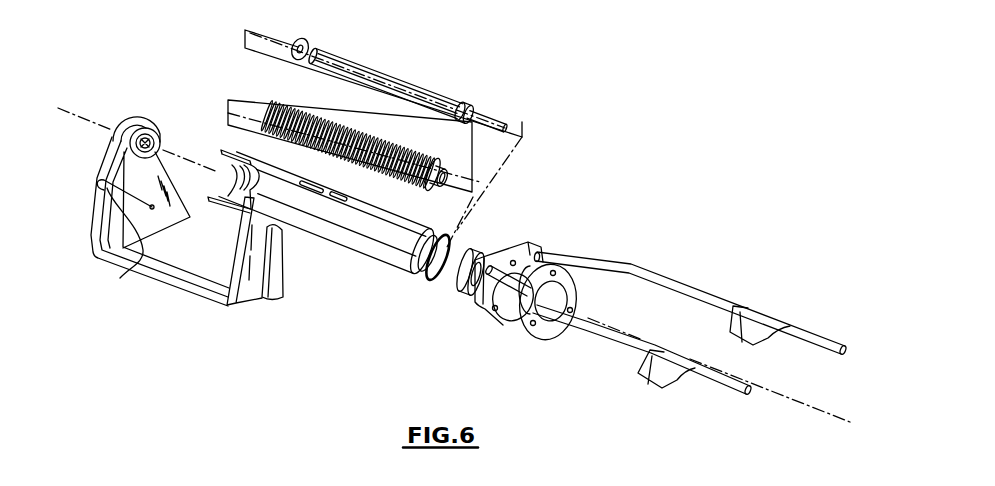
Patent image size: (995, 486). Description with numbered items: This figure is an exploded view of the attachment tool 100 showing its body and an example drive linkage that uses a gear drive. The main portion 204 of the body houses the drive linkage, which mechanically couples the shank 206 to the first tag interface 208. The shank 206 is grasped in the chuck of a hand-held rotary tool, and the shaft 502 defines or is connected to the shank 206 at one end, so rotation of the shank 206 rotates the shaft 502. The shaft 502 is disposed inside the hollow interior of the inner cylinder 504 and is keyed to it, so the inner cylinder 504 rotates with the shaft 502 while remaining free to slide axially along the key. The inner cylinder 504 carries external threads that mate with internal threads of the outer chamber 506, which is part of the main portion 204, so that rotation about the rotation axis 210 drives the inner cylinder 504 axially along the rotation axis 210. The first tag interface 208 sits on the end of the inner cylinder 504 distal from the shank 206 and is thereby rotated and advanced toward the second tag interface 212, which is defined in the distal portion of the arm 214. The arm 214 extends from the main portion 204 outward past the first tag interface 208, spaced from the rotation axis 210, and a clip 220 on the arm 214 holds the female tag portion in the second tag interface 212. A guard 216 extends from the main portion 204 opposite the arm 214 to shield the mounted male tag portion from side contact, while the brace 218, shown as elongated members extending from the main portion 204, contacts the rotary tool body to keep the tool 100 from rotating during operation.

The tool 100 is at (589, 168).
The main portion 204 is at (368, 243).
The shank 206 is at (503, 122).
The first tag interface 208 is at (256, 103).
The rotation axis 210 is at (70, 112).
The second tag interface 212 is at (152, 131).
The arm 214 is at (112, 211).
The guard 216 is at (224, 150).
The brace 218 is at (657, 268).
The clip 220 is at (141, 265).
The shaft 502 is at (462, 100).
The inner cylinder 504 is at (440, 168).
The outer chamber 506 is at (440, 282).